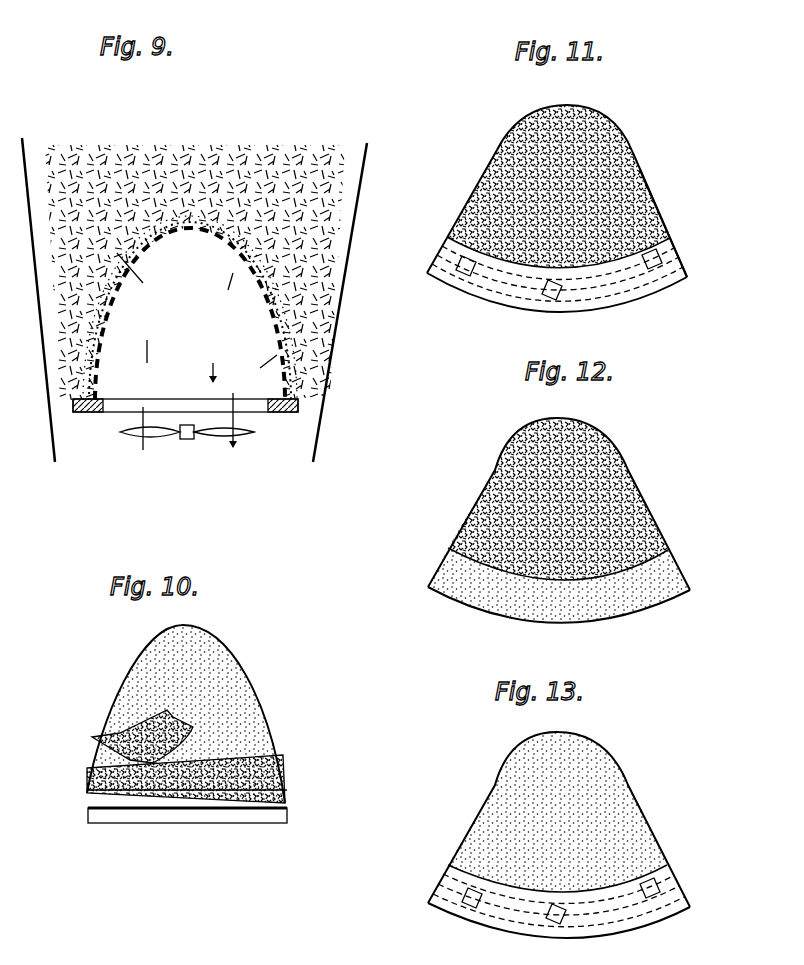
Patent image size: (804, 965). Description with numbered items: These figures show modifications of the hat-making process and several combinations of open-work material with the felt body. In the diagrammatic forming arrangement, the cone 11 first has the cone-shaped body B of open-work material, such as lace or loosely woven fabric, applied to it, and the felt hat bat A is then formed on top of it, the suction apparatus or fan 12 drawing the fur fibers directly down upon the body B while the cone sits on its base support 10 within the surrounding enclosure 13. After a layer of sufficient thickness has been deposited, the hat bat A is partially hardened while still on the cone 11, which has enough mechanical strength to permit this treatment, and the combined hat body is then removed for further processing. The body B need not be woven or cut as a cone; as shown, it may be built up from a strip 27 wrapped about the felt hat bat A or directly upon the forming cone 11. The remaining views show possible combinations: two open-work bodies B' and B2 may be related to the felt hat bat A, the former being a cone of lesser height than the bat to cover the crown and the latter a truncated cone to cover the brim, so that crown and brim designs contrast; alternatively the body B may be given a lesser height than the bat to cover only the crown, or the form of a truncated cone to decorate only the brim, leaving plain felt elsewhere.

In FIG. 9, the wall 13 is at (329, 371).
In FIG. 9, the cone 11 is at (218, 238).
In FIG. 9, the felt hat bat A is at (282, 318).
In FIG. 10, the felt hat bat A is at (263, 693).
In FIG. 11, the felt hat bat A is at (640, 185).
In FIG. 12, the felt hat bat A is at (677, 568).
In FIG. 13, the felt hat bat A is at (628, 797).
In FIG. 9, the body of open-work material B is at (197, 317).
In FIG. 10, the body of open-work material B is at (211, 787).
In FIG. 12, the body of open-work material B is at (559, 504).
In FIG. 13, the body of open-work material B is at (573, 901).
In FIG. 9, the base plate 10 is at (295, 413).
In FIG. 9, the suction apparatus or fan 12 is at (218, 442).
In FIG. 10, the strip 27 is at (90, 737).
In FIG. 11, the open-work body B' is at (675, 223).
In FIG. 11, the open-work body B2 is at (680, 253).